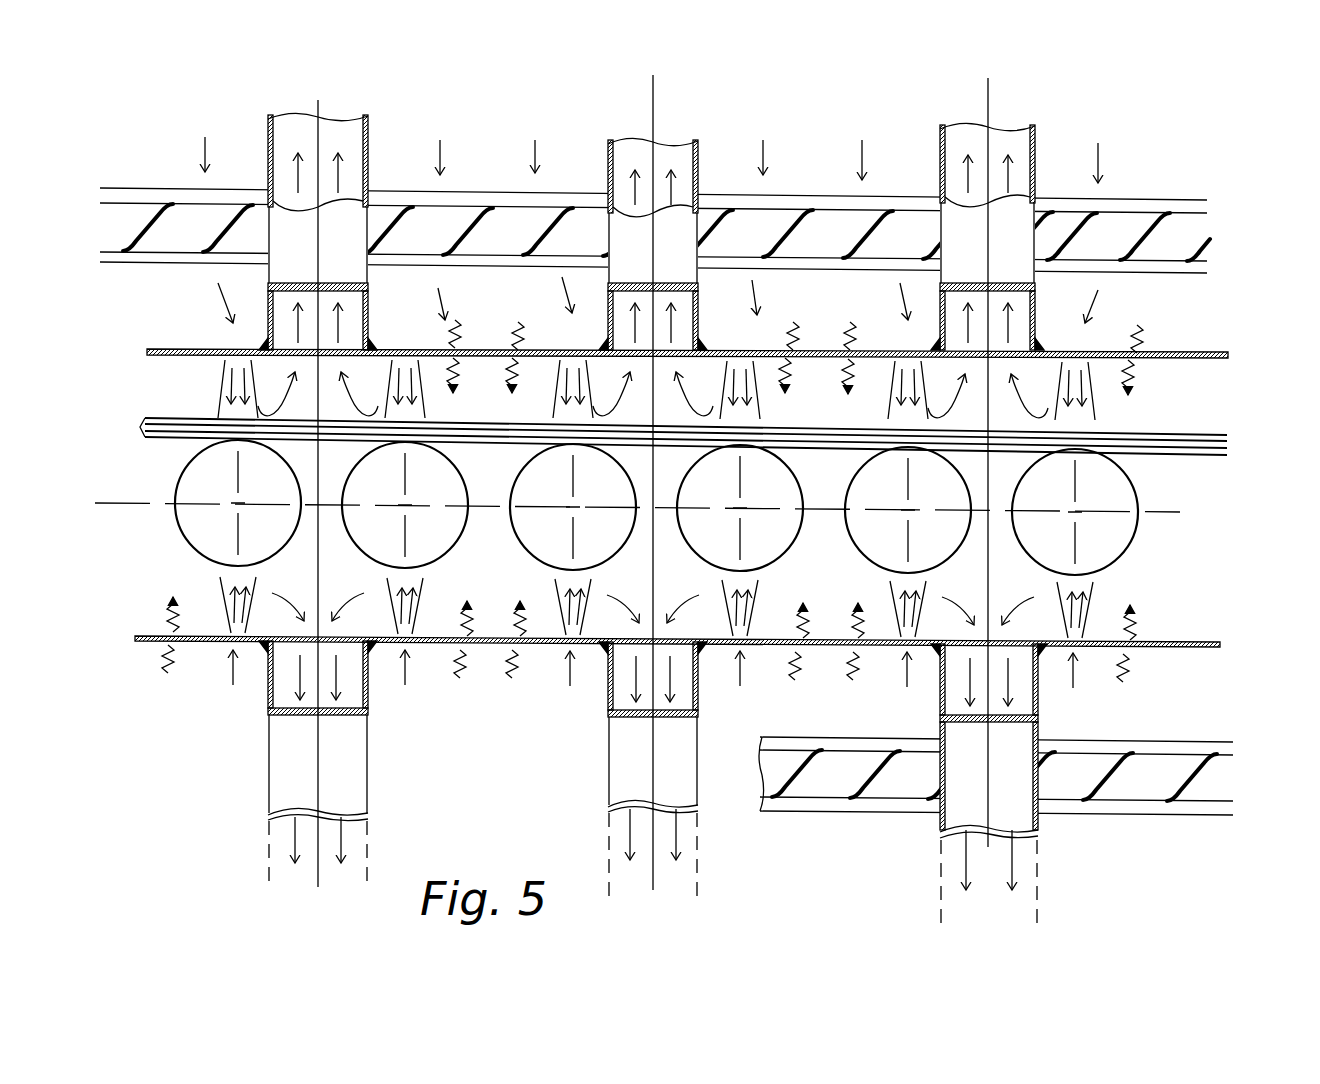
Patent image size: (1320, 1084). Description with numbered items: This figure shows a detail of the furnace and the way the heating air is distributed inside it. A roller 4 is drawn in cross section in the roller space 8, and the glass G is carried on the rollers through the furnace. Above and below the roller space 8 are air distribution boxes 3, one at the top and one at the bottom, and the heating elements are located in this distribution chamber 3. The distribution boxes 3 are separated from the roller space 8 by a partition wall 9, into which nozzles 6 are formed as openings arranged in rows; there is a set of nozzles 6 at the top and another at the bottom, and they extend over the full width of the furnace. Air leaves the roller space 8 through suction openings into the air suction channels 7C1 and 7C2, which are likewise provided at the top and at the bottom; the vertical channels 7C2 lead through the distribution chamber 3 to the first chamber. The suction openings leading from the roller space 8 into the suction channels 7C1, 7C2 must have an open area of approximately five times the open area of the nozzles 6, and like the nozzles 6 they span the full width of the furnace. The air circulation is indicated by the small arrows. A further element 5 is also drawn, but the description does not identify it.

The air distribution box 3 is at (651, 432).
The roller 4 is at (200, 510).
The conveyor belt 5 is at (150, 222).
The nozzle 6 is at (228, 352).
The air suction channel 7C1 is at (287, 325).
The air suction channel 7C2 is at (333, 138).
The roller space 8 is at (652, 501).
The partition wall 9 is at (1213, 356).
The glass G is at (1195, 440).